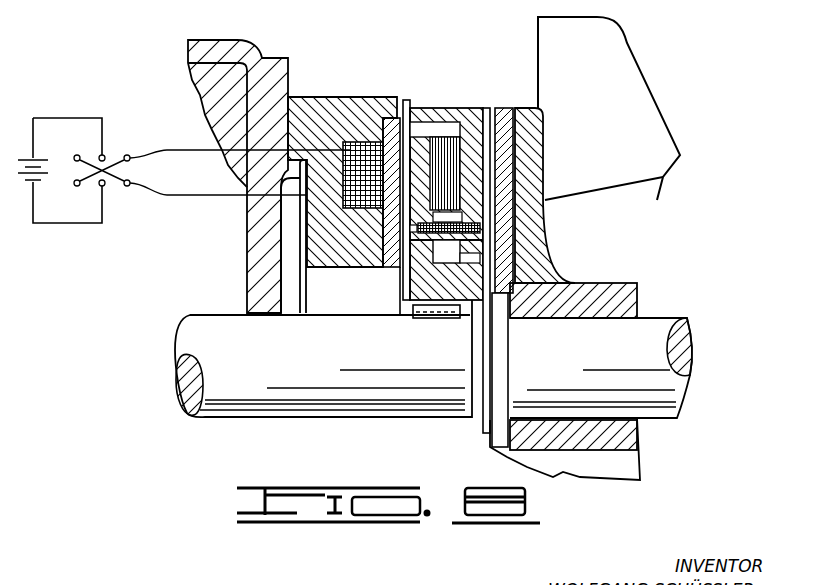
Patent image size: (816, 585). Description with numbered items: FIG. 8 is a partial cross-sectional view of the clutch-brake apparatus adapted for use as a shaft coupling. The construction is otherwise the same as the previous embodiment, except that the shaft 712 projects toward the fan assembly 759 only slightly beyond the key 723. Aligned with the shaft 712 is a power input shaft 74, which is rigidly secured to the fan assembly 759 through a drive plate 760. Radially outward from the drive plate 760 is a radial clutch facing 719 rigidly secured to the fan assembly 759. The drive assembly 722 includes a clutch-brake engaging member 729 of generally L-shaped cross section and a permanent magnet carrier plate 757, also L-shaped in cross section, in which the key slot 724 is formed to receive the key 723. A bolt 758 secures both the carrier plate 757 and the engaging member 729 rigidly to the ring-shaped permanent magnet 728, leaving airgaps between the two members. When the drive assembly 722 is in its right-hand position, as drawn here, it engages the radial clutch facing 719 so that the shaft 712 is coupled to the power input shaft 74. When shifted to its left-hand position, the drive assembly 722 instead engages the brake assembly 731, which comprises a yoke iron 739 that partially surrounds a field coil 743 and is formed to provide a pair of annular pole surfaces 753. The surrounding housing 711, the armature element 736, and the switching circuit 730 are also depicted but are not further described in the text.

The housing 711 is at (210, 38).
The yoke iron 739 is at (303, 110).
The brake assembly 731 is at (330, 93).
The field coil 743 is at (345, 182).
The annular pole surfaces 753 is at (397, 110).
The armature disc 736 is at (397, 216).
The drive assembly 722 is at (444, 105).
The clutch-brake engaging member 729 is at (470, 125).
The permanent magnet carrier plate 757 is at (430, 283).
The key 723 is at (428, 320).
The key slot 724 is at (452, 322).
The permanent magnet 728 is at (505, 108).
The radial clutch facing 719 is at (503, 157).
The bolt 758 is at (530, 200).
The drive plate 760 is at (500, 242).
The fan assembly 759 is at (630, 45).
The power input shaft 74 is at (643, 330).
The shaft 712 is at (287, 378).
The switch circuit 730 is at (120, 142).